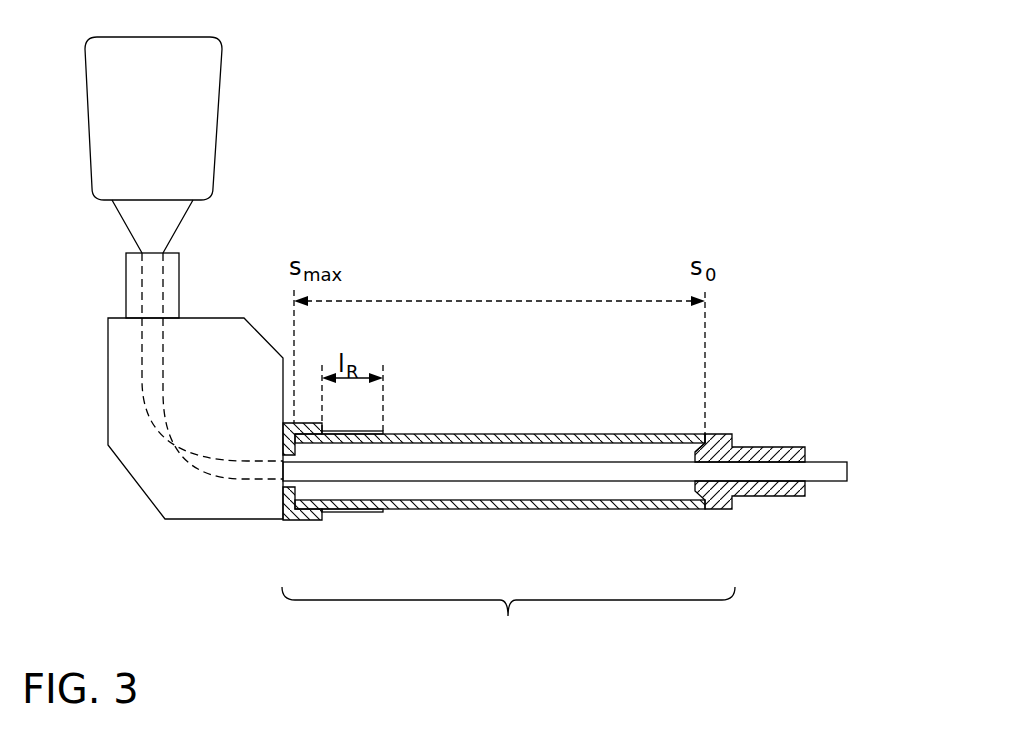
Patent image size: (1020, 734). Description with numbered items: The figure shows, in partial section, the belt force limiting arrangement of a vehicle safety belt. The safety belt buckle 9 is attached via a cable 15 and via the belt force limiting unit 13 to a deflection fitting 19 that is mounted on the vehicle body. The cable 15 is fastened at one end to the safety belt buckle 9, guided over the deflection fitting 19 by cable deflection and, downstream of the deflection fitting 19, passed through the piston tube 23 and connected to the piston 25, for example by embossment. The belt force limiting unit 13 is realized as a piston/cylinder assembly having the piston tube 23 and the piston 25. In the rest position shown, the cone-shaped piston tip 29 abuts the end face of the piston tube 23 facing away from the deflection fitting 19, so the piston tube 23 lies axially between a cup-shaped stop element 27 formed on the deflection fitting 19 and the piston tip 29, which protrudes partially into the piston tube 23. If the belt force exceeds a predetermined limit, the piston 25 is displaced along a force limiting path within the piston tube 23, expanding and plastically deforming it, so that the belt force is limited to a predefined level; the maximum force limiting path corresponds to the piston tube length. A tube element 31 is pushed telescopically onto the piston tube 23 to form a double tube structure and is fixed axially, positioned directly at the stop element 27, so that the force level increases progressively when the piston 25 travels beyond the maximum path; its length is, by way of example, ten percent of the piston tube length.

The safety belt buckle 9 is at (218, 87).
The deflection fitting 19 is at (206, 318).
The cable 15 is at (173, 447).
The stop element 27 is at (300, 510).
The tube element 31 is at (368, 510).
The piston tube 23 is at (533, 507).
The piston 25 is at (723, 507).
The piston tip 29 is at (710, 439).
The belt force limiting unit 13 is at (508, 619).